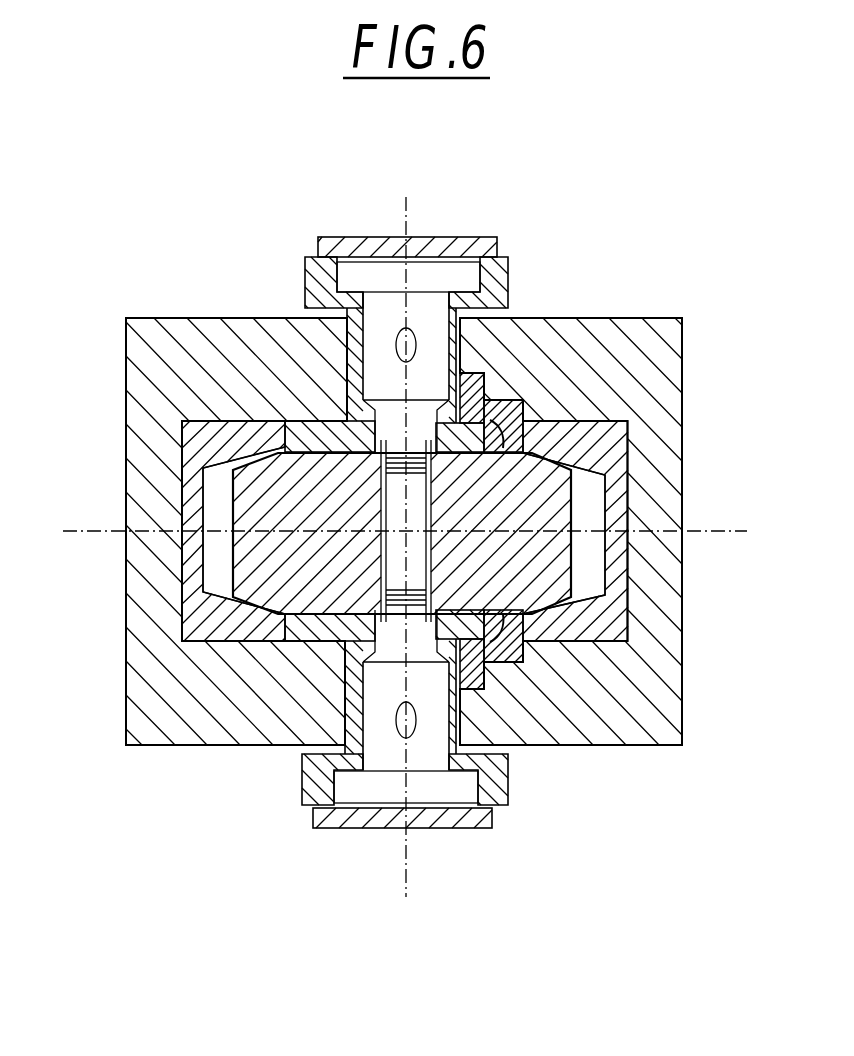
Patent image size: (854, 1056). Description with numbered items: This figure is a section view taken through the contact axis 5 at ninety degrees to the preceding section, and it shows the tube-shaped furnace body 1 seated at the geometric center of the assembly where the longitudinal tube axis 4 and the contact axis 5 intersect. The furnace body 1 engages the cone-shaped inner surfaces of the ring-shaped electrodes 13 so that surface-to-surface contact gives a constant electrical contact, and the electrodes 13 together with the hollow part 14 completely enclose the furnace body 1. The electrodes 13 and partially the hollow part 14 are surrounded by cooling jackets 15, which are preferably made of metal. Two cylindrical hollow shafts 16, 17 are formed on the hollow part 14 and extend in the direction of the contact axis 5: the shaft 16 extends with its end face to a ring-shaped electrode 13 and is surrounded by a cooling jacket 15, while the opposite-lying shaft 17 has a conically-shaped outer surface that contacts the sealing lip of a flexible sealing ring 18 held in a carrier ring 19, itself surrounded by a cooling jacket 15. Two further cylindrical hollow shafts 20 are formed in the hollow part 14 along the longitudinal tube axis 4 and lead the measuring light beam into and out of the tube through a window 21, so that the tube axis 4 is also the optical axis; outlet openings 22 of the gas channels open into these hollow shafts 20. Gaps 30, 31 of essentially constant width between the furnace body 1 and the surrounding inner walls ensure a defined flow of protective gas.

The furnace body 1 is at (582, 554).
The longitudinal tube axis 4 is at (406, 205).
The contact axis 5 is at (717, 532).
The ring-shaped electrodes 13 is at (197, 563).
The hollow part 14 is at (318, 651).
The cooling jackets 15 is at (147, 670).
The cylindrical hollow shaft 16 is at (290, 440).
The cylindrical hollow shaft 17 is at (478, 393).
The flexible sealing ring 18 is at (525, 645).
The carrier ring 19 is at (499, 642).
The cylindrical hollow shafts 20 is at (370, 347).
The window 21 is at (475, 237).
The outlet openings 22 is at (388, 338).
The gap 30 is at (282, 430).
The gap 31 is at (213, 492).